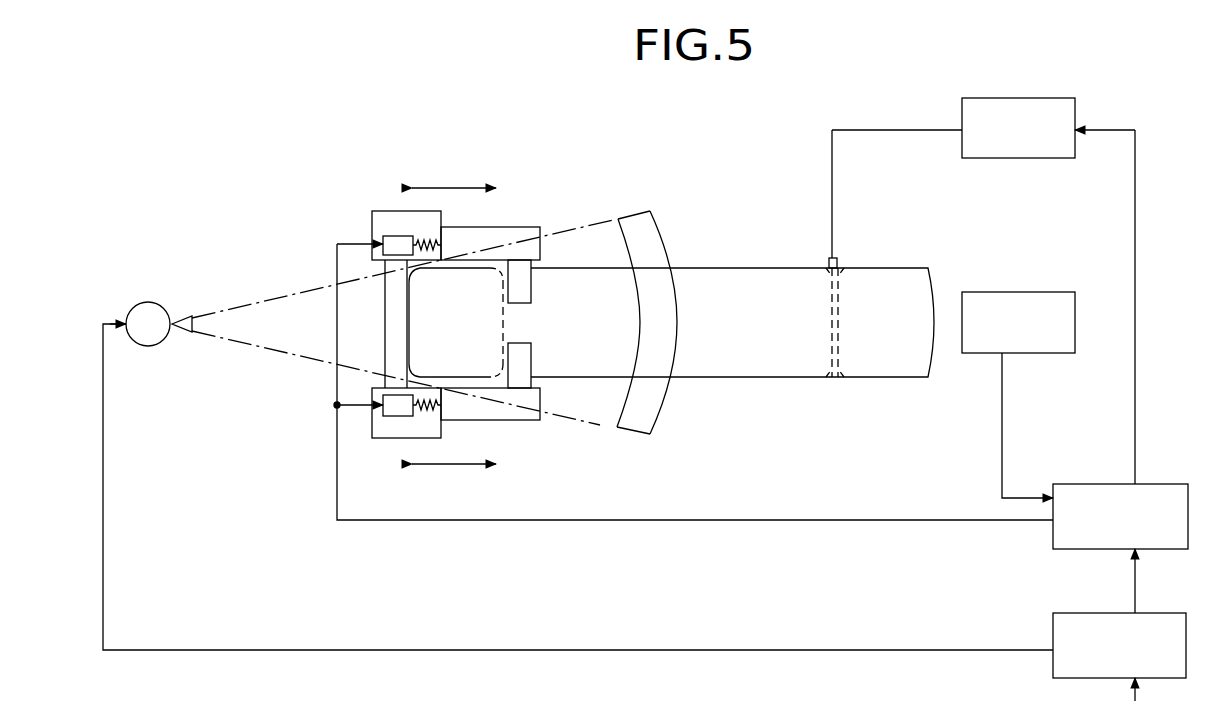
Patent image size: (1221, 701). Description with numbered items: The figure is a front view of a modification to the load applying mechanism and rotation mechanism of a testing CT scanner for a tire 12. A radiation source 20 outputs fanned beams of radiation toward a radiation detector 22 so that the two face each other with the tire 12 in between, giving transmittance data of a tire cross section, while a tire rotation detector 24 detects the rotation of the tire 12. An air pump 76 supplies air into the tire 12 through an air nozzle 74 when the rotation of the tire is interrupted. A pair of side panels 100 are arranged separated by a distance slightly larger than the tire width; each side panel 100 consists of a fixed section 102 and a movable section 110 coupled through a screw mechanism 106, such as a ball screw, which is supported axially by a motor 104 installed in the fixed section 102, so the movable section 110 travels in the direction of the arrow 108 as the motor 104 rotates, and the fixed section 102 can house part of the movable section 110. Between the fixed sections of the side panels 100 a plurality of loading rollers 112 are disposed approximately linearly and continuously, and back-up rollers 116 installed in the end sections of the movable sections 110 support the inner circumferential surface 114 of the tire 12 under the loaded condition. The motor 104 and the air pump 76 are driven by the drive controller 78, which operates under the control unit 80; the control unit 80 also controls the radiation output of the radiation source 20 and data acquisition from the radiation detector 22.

The tire 12 is at (717, 377).
The radiation source 20 is at (153, 302).
The radiation detector 22 is at (662, 225).
The tire rotation detector 24 is at (1030, 292).
The air nozzle 74 is at (836, 258).
The air pump 76 is at (1050, 98).
The drive controller 78 is at (1165, 484).
The control unit 80 is at (1170, 613).
The side panel 100 is at (390, 329).
The fixed section 102 is at (385, 211).
The motor 104 is at (392, 238).
The screw mechanism 106 is at (426, 244).
The arrow 108 is at (455, 188).
The movable section 110 is at (503, 227).
The loading rollers 112 is at (386, 312).
The inner circumferential surface 114 is at (505, 320).
The back-up rollers 116 is at (534, 288).